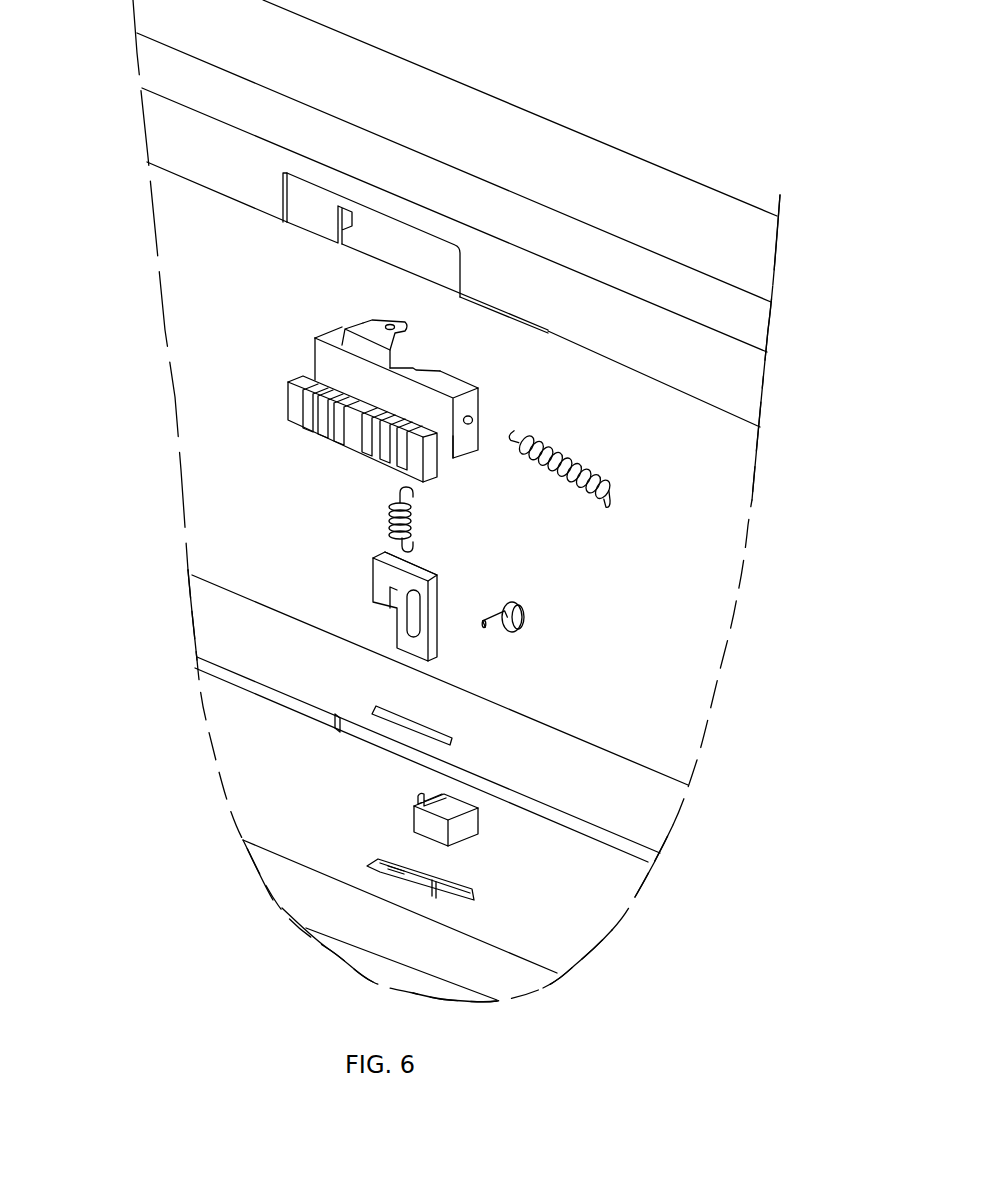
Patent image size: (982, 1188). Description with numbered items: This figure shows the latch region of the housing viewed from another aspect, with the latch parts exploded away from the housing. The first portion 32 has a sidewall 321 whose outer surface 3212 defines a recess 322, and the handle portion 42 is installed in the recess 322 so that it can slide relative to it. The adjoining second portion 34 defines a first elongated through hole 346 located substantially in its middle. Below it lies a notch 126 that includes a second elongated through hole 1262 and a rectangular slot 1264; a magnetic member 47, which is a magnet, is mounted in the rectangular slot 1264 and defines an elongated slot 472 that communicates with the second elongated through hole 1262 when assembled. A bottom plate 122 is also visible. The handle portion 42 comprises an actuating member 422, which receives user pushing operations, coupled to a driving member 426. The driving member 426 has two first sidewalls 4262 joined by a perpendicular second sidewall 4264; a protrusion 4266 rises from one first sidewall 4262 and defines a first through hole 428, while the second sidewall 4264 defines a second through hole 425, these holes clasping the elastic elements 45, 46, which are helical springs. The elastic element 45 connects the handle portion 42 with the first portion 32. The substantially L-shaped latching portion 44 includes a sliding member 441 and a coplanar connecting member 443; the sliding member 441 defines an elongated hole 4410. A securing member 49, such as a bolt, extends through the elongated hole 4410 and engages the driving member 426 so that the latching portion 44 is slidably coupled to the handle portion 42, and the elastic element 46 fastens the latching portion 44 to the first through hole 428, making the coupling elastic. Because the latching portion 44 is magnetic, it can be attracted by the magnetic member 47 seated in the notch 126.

The first portion 32 is at (732, 393).
The sidewall 321 is at (592, 193).
The outer surface 3212 is at (215, 147).
The recess 322 is at (393, 248).
The second portion 34 is at (647, 823).
The first elongated through hole 346 is at (410, 725).
The bottom plate 122 is at (517, 980).
The handle portion 42 is at (268, 326).
The driving member 426 is at (416, 395).
The first sidewall 4262 is at (337, 343).
The first through hole 428 is at (393, 325).
The protrusion 4266 is at (398, 366).
The second through hole 425 is at (473, 418).
The second sidewall 4264 is at (468, 440).
The actuating member 422 is at (293, 425).
The elastic element 45 is at (573, 450).
The latching portion 44 is at (340, 545).
The elastic element 46 is at (413, 513).
The sliding member 441 is at (443, 592).
The elongated hole 4410 is at (432, 581).
The connecting member 443 is at (415, 565).
The securing member 49 is at (523, 620).
The magnetic member 47 is at (430, 834).
The elongated slot 472 is at (412, 823).
The notch 126 is at (350, 916).
The second elongated through hole 1262 is at (400, 875).
The rectangular slot 1264 is at (333, 926).